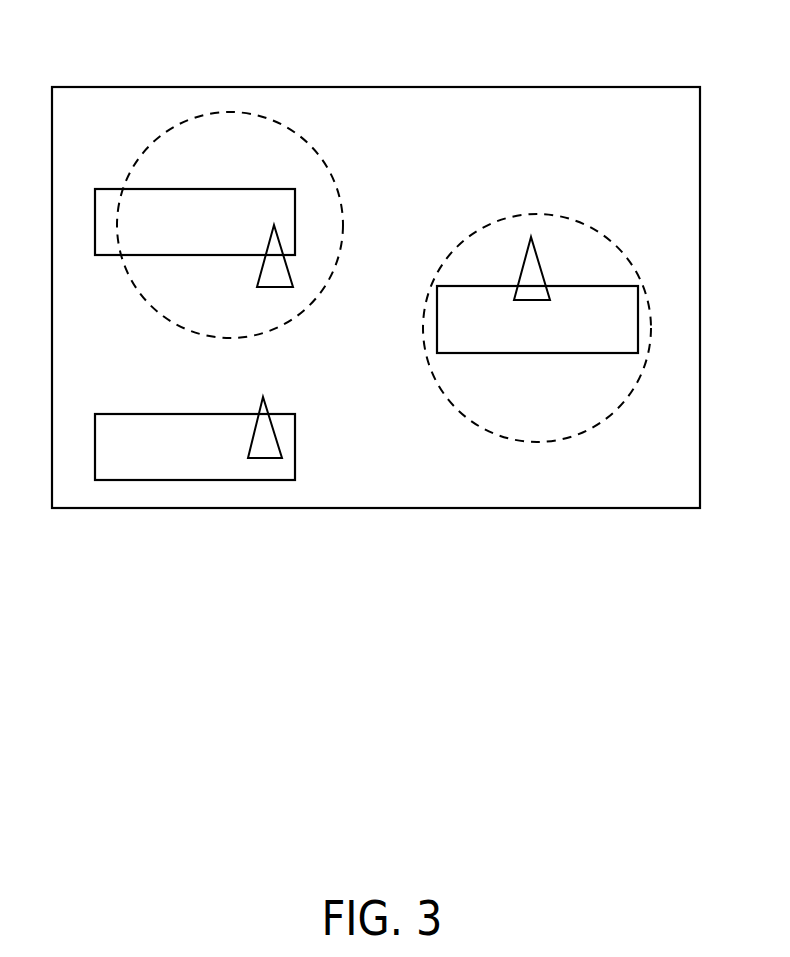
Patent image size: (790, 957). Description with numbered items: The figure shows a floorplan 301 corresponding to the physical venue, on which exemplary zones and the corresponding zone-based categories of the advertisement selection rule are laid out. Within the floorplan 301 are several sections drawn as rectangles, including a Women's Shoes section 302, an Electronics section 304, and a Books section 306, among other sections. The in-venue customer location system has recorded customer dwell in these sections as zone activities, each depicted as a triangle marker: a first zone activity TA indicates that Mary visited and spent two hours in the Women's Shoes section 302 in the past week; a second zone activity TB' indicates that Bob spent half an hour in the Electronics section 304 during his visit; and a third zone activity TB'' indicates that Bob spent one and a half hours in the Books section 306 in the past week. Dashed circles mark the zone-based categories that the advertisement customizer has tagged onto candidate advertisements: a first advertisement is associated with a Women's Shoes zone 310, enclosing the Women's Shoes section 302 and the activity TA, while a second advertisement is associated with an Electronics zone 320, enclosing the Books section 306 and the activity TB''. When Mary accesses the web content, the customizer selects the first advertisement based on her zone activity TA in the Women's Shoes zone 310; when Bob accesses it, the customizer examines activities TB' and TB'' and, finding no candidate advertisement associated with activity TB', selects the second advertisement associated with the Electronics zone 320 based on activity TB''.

The floorplan 301 is at (643, 498).
The Women's Shoes section 302 is at (177, 236).
The Electronics section 304 is at (195, 496).
The Books section 306 is at (519, 333).
The Women's Shoes zone 310 is at (230, 184).
The Electronics zone 320 is at (537, 229).
The first zone activity TA is at (270, 242).
The second zone activity TB' is at (269, 496).
The third zone activity TB'' is at (510, 158).